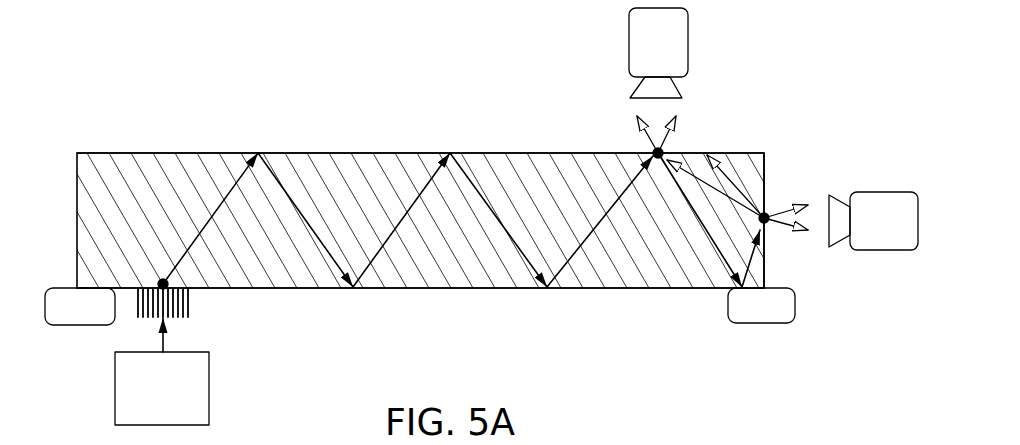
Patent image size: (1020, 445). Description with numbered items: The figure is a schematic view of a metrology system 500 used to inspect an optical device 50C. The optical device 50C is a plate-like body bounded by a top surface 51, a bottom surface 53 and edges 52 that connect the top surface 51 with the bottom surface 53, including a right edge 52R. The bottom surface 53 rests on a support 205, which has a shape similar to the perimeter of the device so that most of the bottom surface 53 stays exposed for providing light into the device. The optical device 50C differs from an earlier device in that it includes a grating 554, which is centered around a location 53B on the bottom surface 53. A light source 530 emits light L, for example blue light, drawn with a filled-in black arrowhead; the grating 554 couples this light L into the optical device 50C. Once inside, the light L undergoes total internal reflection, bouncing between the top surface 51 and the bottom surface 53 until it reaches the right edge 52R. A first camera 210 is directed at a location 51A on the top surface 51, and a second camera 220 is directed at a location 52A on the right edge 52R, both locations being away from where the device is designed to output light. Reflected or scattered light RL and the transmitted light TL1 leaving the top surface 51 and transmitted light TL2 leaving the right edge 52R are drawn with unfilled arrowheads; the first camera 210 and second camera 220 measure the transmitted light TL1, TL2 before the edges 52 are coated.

The metrology system 500 is at (783, 58).
The optical device 50C is at (182, 128).
The edges 52 is at (77, 205).
The top surface 51 is at (302, 153).
The bottom surface 53 is at (498, 288).
The right edge 52R is at (766, 170).
The location on top surface 51A is at (662, 151).
The location on right edge 52A is at (770, 224).
The location on bottom surface 53B is at (163, 284).
The grating 554 is at (188, 302).
The light source 530 is at (115, 384).
The support 205 is at (75, 325).
The first camera 210 is at (640, 56).
The second camera 220 is at (866, 232).
The transmitted light TL1 is at (654, 150).
The transmitted light TL2 is at (777, 204).
The reflected/scattered light RL is at (745, 192).
The light L is at (217, 208).